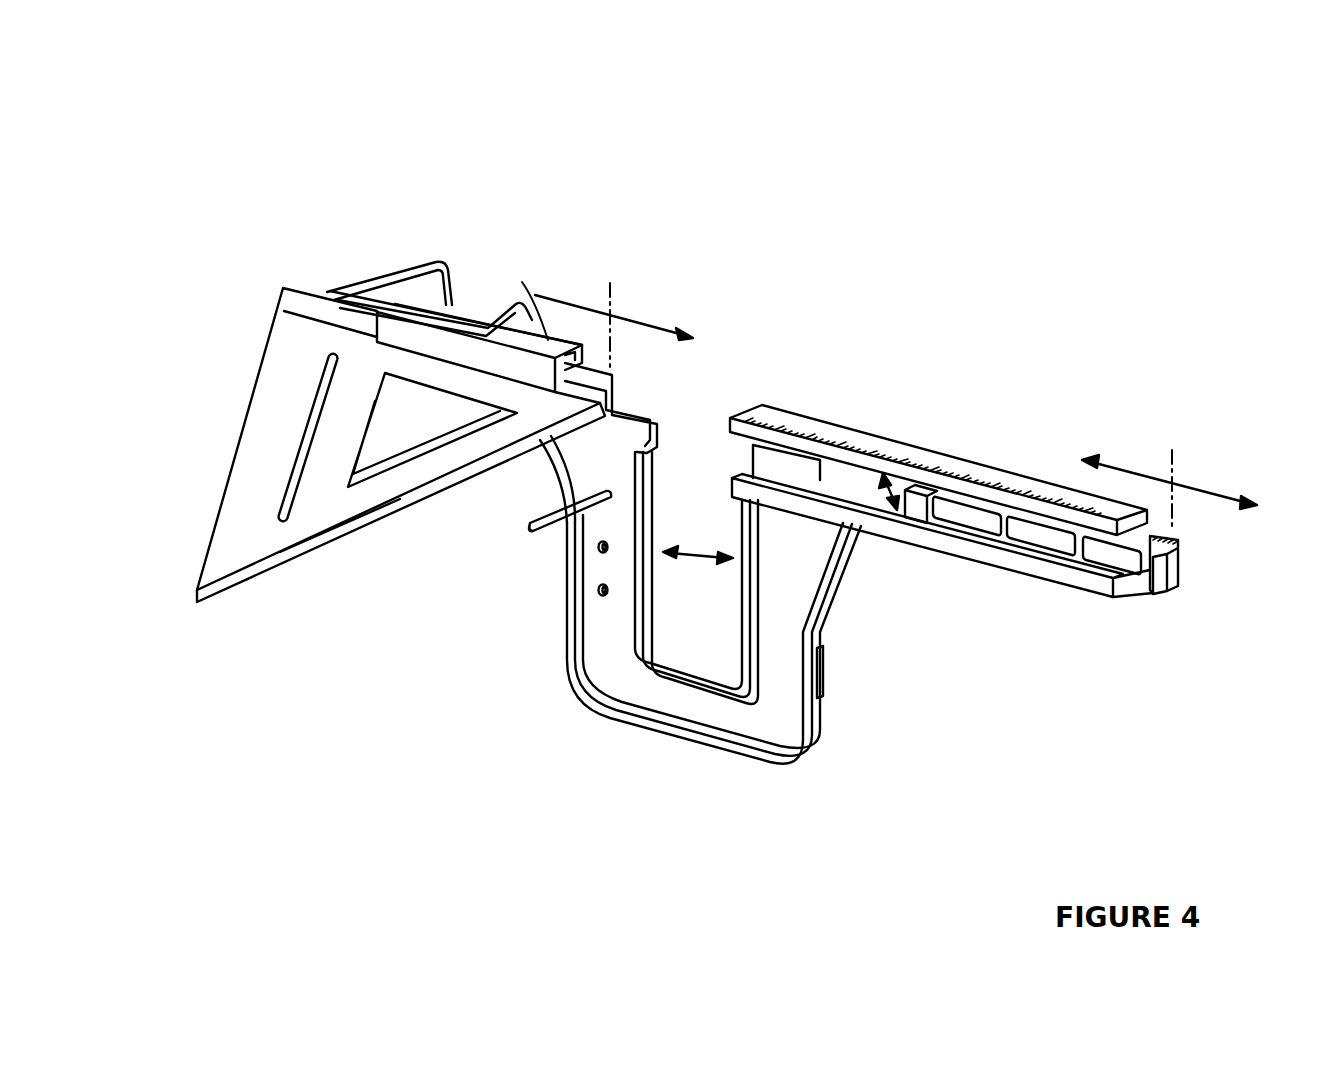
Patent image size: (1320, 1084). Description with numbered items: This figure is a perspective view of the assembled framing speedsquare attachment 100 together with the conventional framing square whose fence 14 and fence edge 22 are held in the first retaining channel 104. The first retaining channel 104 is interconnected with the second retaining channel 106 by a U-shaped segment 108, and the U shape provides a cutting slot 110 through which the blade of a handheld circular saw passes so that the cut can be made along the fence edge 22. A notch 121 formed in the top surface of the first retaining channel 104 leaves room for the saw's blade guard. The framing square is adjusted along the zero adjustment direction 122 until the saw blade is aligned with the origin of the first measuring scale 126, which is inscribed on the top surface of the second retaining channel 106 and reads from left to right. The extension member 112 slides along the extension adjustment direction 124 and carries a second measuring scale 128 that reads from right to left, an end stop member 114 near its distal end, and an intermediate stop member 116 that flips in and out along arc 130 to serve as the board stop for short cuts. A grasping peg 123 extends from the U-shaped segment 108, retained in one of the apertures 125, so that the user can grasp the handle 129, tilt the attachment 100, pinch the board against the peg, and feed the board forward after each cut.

The fence 14 is at (288, 285).
The fence edge 22 is at (338, 528).
The framing speedsquare attachment 100 is at (380, 800).
The first retaining channel 104 is at (533, 293).
The second retaining channel 106 is at (1003, 560).
The U-shaped segment 108 is at (773, 720).
The cutting slot 110 is at (693, 560).
The extension member 112 is at (1073, 560).
The end stop member 114 is at (1173, 592).
The intermediate stop member 116 is at (947, 532).
The notch 121 is at (658, 390).
The zero adjustment direction 122 is at (578, 343).
The grasping peg 123 is at (528, 531).
The extension adjustment direction 124 is at (1140, 500).
The apertures 125 is at (597, 554).
The first measuring scale 126 is at (757, 415).
The second measuring scale 128 is at (1162, 513).
The handle 129 is at (343, 288).
The arc 130 is at (880, 492).